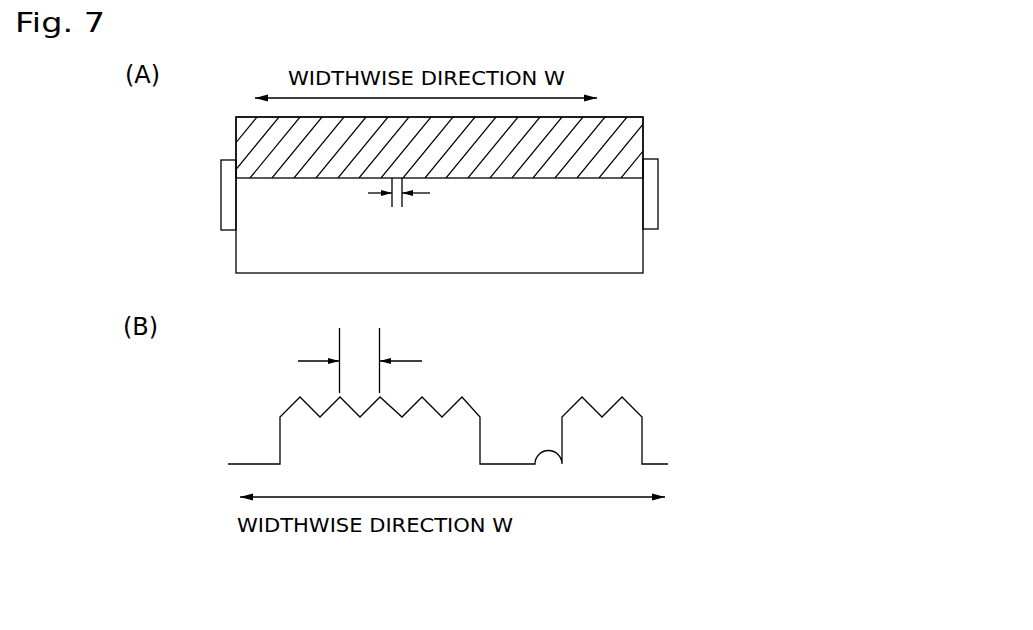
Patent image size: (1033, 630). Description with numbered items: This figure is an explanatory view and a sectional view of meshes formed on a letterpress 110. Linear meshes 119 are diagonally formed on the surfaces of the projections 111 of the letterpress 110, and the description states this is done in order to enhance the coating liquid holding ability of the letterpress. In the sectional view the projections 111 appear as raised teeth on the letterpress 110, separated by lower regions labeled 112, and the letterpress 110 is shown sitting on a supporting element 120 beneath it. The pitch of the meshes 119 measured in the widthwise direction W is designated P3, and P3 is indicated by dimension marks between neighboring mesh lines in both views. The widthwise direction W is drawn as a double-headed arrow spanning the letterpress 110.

The letterpress 110 is at (643, 117).
The projection 111 is at (457, 153).
The projection (ridge) of abrasive layer 112 is at (297, 155).
The linear mesh 119 is at (425, 386).
The base member 120 is at (615, 265).
The pitch of the meshes P3 is at (364, 285).